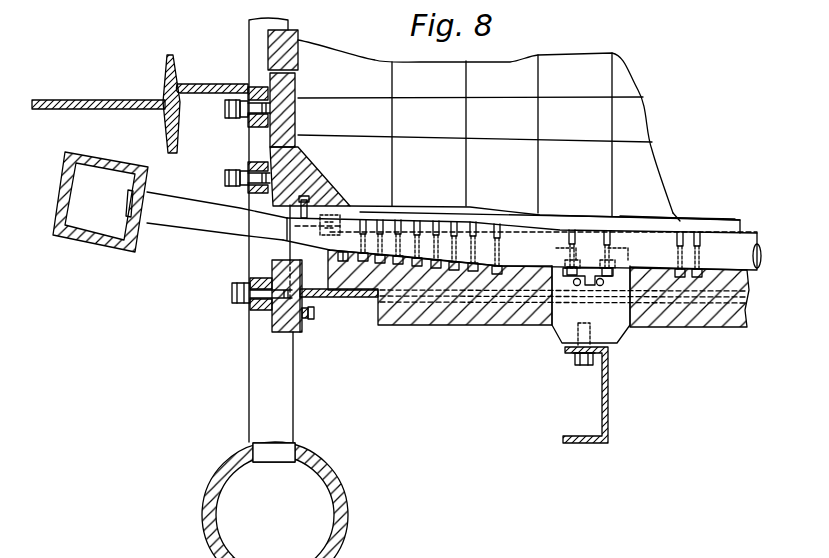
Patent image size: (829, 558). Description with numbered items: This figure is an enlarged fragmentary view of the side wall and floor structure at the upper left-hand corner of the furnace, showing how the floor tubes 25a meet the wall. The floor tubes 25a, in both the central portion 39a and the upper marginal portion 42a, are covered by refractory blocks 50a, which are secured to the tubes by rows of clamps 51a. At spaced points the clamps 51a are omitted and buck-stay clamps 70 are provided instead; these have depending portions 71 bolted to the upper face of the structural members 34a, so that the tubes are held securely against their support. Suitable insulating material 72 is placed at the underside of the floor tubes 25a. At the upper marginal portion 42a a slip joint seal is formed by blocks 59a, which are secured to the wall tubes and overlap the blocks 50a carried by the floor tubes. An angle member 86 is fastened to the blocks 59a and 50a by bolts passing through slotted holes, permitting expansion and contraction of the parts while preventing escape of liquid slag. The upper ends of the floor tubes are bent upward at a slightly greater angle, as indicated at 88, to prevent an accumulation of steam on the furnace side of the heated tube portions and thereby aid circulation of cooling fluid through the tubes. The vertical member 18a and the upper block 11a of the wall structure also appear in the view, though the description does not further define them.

The hanger bar 18a is at (249, 36).
The clamp block 11a is at (300, 36).
The blocks 59a is at (317, 167).
The angle member 86 is at (352, 203).
The upper marginal portion 42a is at (352, 198).
The refractory blocks 50a is at (362, 205).
The upward bend of floor tubes 88 is at (400, 208).
The central portion 39a is at (683, 220).
The floor tubes 25a is at (754, 233).
The insulating material 72 is at (515, 315).
The clamps 51a is at (733, 270).
The buck-stay clamps 70 is at (617, 341).
The depending portions 71 is at (560, 345).
The structural members 34a is at (608, 415).